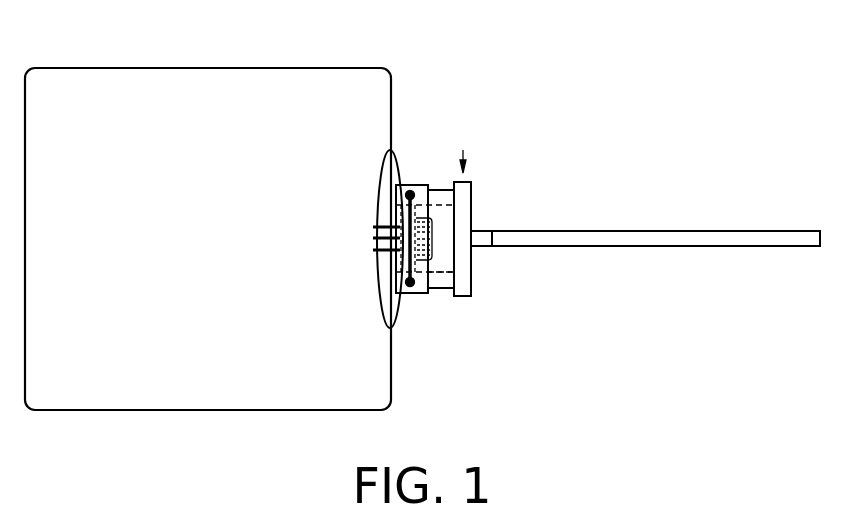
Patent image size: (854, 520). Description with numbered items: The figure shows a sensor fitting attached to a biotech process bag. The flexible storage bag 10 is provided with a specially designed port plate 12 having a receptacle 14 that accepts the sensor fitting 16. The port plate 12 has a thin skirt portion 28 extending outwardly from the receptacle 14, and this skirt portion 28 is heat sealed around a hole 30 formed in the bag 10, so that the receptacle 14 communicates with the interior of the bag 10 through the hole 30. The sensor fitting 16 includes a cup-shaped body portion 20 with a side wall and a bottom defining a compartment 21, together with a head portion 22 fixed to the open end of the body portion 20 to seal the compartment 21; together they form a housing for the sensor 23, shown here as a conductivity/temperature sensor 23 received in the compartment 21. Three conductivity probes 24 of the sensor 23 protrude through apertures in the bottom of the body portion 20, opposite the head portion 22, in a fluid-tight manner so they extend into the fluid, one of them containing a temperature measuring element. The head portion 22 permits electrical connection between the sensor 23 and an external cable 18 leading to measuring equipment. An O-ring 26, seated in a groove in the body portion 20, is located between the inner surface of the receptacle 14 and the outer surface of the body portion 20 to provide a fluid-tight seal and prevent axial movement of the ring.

The flexible storage bag 10 is at (233, 90).
The port plate 12 is at (395, 318).
The receptacle 14 is at (418, 293).
The sensor fitting 16 is at (463, 160).
The cable 18 is at (733, 235).
The body portion 20 is at (440, 190).
The compartment 21 is at (444, 276).
The head portion 22 is at (471, 200).
The sensor 23 is at (432, 240).
The probes 24 is at (374, 250).
The O-ring 26 is at (411, 185).
The skirt portion 28 is at (389, 158).
The hole 30 is at (378, 206).